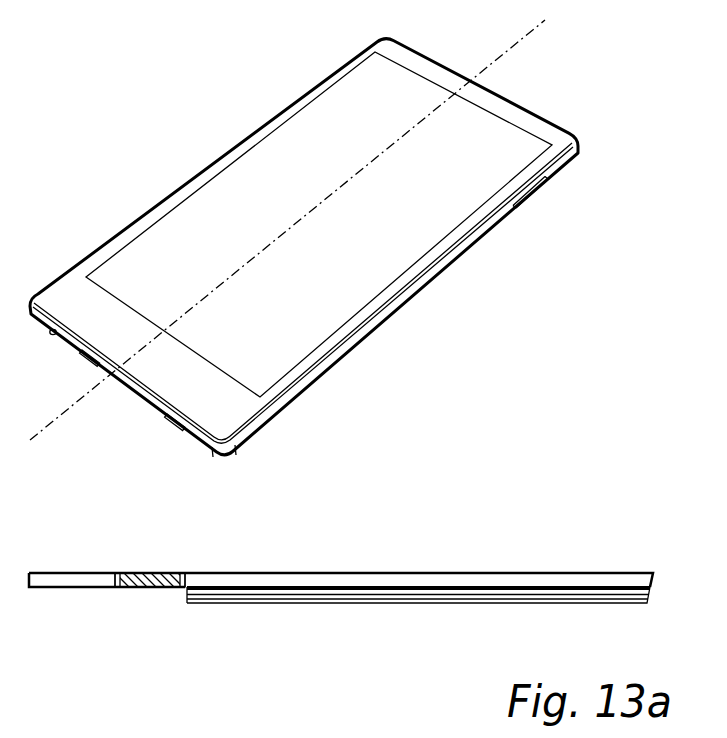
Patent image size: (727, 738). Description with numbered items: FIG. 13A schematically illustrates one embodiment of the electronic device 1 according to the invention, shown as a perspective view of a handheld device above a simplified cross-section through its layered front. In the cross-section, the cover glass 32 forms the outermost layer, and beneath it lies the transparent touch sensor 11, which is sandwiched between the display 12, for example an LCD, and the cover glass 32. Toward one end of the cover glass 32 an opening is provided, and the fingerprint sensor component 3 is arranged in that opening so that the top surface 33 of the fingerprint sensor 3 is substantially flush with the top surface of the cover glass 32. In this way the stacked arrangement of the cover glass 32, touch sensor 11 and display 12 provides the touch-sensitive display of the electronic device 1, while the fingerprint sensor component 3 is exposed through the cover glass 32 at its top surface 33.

The electronic device 1 is at (452, 514).
The fingerprint sensor component 3 is at (145, 587).
The top surface of the fingerprint sensor 33 is at (157, 572).
The cover glass 32 is at (583, 580).
The display 12 is at (542, 603).
The transparent touch sensor 11 is at (610, 592).